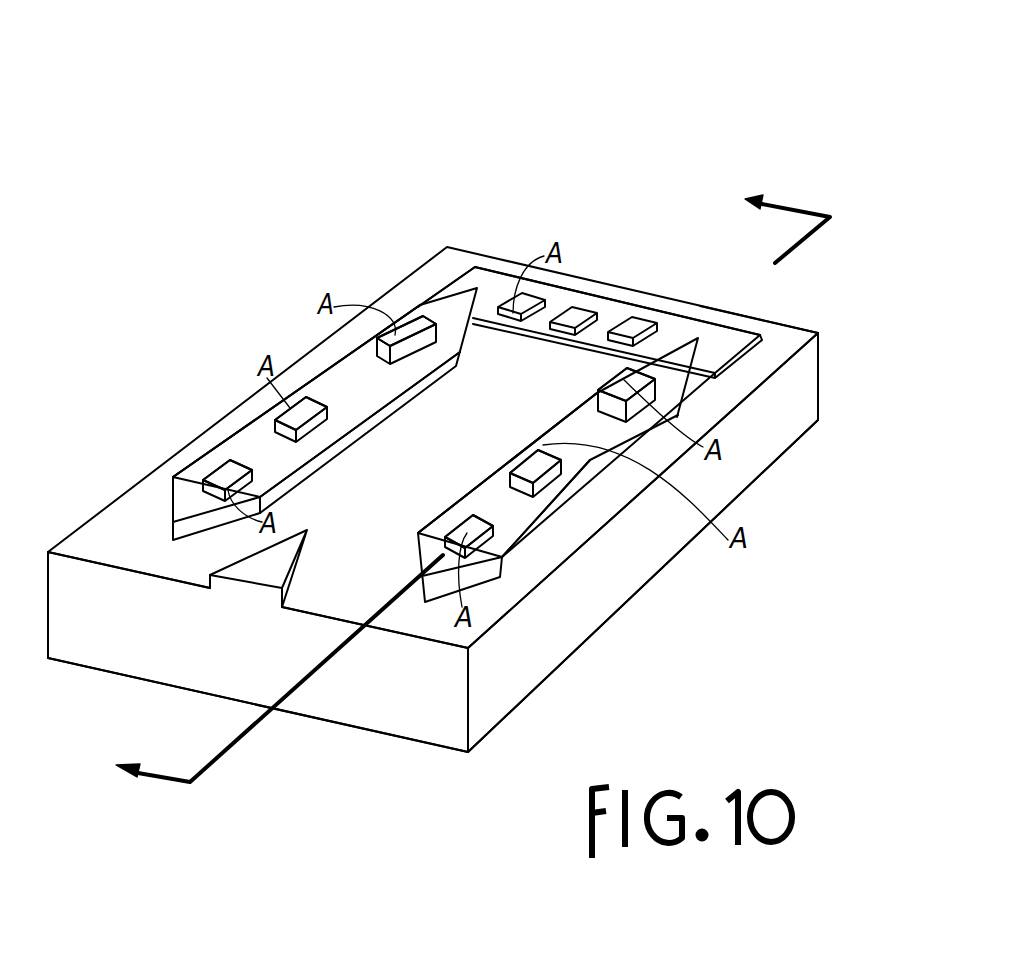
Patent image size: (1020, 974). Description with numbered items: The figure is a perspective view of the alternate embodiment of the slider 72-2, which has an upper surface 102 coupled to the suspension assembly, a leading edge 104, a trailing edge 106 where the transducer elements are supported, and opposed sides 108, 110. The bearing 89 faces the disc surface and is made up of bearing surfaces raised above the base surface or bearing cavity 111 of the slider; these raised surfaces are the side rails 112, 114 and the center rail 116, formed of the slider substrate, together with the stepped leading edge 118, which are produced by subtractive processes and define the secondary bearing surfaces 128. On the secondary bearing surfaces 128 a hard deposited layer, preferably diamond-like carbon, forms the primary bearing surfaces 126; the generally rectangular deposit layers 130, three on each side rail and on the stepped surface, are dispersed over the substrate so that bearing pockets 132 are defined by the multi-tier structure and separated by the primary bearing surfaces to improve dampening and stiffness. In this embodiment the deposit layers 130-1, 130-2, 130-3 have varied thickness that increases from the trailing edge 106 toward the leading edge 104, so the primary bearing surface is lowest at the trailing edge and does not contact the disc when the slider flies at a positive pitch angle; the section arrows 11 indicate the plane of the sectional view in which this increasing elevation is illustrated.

The slider 72-2 is at (553, 136).
The section line 11- 11 is at (469, 480).
The bearing 89 is at (657, 293).
The upper surface 102 is at (563, 665).
The leading edge 104 is at (803, 328).
The trailing edge 106 is at (244, 648).
The side 108 is at (255, 395).
The side 110 is at (600, 592).
The bearing cavity 111 is at (356, 546).
The side rail 112 is at (357, 346).
The side rail 114 is at (500, 482).
The center rail 116 is at (263, 563).
The stepped leading edge 118 is at (572, 320).
The primary bearing surfaces 126 is at (212, 477).
The secondary bearing surfaces 128 is at (372, 373).
The deposit layer 130 is at (517, 295).
The deposit layer 130-1 is at (217, 478).
The deposit layer 130-2 is at (303, 432).
The deposit layer 130-3 is at (424, 314).
The bearing pockets 132 is at (270, 443).